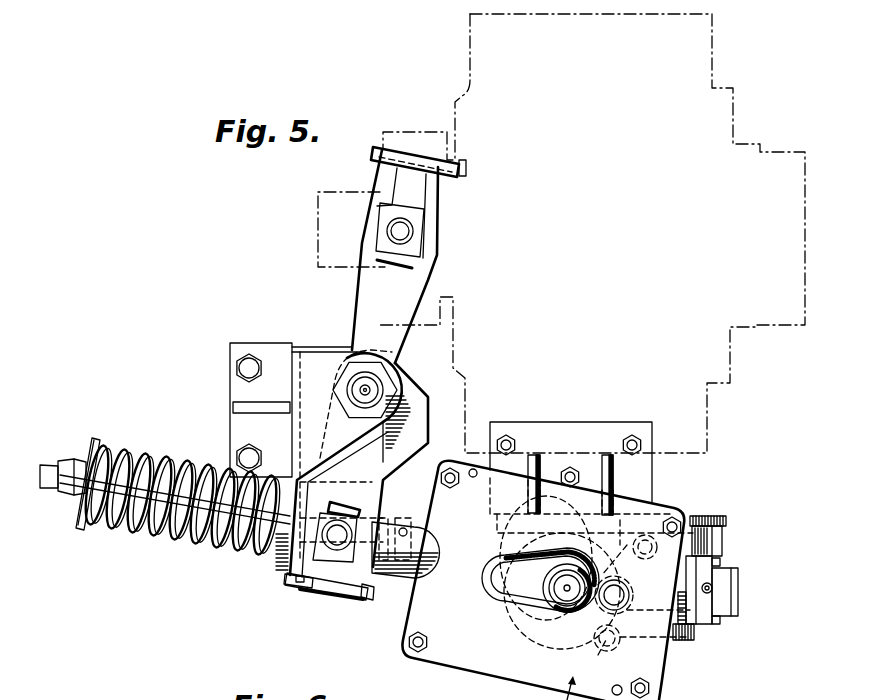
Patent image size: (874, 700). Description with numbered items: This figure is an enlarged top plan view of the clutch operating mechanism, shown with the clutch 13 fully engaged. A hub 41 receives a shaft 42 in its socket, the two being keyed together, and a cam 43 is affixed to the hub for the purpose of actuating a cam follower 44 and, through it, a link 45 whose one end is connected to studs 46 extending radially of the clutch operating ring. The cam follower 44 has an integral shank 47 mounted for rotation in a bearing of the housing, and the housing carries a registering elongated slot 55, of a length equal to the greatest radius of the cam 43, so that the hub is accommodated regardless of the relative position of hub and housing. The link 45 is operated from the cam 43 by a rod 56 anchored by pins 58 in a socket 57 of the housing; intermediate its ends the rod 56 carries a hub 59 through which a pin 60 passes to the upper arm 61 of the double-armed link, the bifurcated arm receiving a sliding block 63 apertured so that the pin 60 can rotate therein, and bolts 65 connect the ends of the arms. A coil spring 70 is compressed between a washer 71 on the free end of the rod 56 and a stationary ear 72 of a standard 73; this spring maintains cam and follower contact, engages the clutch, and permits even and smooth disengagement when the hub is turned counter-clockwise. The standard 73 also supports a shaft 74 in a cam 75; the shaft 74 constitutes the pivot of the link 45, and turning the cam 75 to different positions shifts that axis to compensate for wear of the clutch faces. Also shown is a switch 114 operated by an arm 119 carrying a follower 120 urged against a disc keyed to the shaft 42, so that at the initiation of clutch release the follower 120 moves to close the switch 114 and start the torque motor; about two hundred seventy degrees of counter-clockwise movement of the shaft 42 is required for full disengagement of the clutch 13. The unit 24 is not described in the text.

The clutch 13 is at (734, 112).
The switch unit 24 is at (742, 594).
The hub 41 is at (544, 589).
The shaft 42 is at (567, 592).
The cam 43 is at (497, 578).
The cam follower 44 is at (620, 641).
The link 45 is at (356, 290).
The studs 46 is at (402, 232).
The shank 47 is at (622, 594).
The elongated slot 55 is at (497, 560).
The rod 56 is at (138, 520).
The socket 57 is at (406, 580).
The pins 58 is at (396, 526).
The hub 59 is at (300, 582).
The pin 60 is at (333, 538).
The upper arm 61 is at (371, 602).
The sliding block 63 is at (372, 486).
The bolts 65 is at (320, 592).
The coil spring 70 is at (134, 453).
The washer 71 is at (95, 441).
The stationary ear 72 is at (282, 571).
The standard 73 is at (316, 358).
The shaft 74 is at (376, 389).
The cam 75 is at (405, 353).
The switch 114 is at (692, 640).
The arm 119 is at (661, 547).
The follower 120 is at (598, 656).